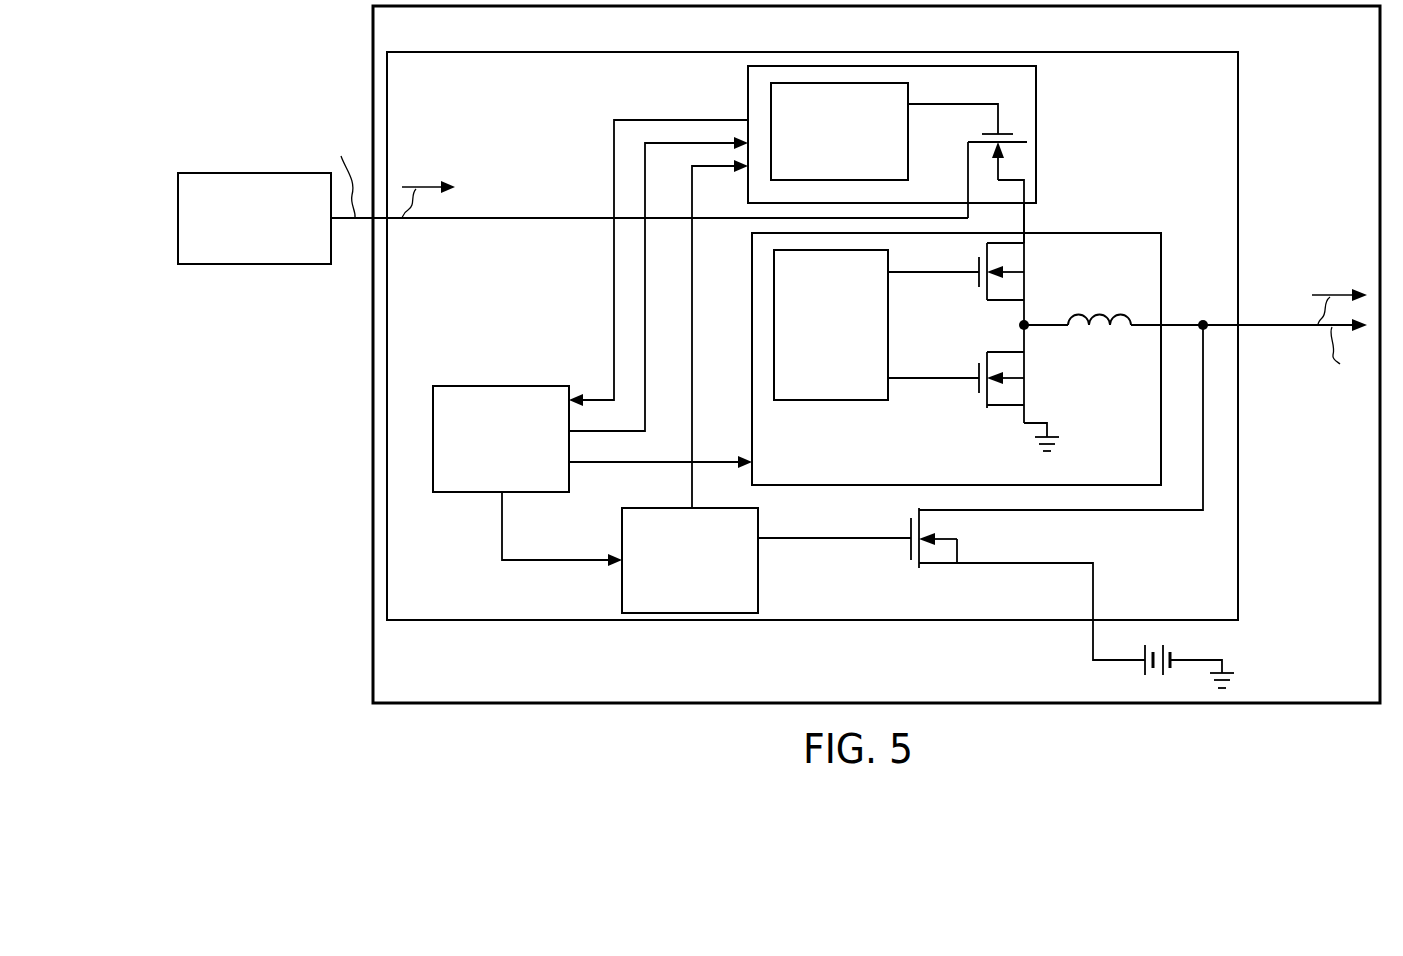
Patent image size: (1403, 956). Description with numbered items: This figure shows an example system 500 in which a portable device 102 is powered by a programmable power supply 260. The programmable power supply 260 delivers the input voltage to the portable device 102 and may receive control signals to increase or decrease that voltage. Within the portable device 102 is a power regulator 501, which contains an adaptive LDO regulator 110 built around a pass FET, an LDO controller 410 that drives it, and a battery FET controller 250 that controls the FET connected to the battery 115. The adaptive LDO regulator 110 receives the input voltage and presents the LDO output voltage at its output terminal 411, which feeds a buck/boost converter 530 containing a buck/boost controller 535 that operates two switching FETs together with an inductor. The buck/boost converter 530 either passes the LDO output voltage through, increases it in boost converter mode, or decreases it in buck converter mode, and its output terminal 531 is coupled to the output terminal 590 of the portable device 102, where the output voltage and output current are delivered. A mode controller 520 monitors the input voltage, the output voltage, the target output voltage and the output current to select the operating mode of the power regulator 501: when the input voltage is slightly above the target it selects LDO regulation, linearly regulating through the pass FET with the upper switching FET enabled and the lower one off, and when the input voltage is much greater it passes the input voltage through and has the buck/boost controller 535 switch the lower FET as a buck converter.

The system 500 is at (276, 16).
The portable device 102 is at (372, 529).
The programmable power supply 260 is at (237, 251).
The power regulator 501 is at (635, 52).
The adaptive LDO regulator 110 is at (748, 98).
The LDO controller 410 is at (822, 163).
The output terminal 411 is at (1027, 217).
The mode controller 520 is at (483, 472).
The battery FET controller 250 is at (672, 595).
The buck/boost converter 530 is at (956, 359).
The buck/boost controller 535 is at (813, 369).
The output terminal 531 is at (1170, 330).
The battery 115 is at (1158, 652).
The output terminal 590 is at (1267, 325).